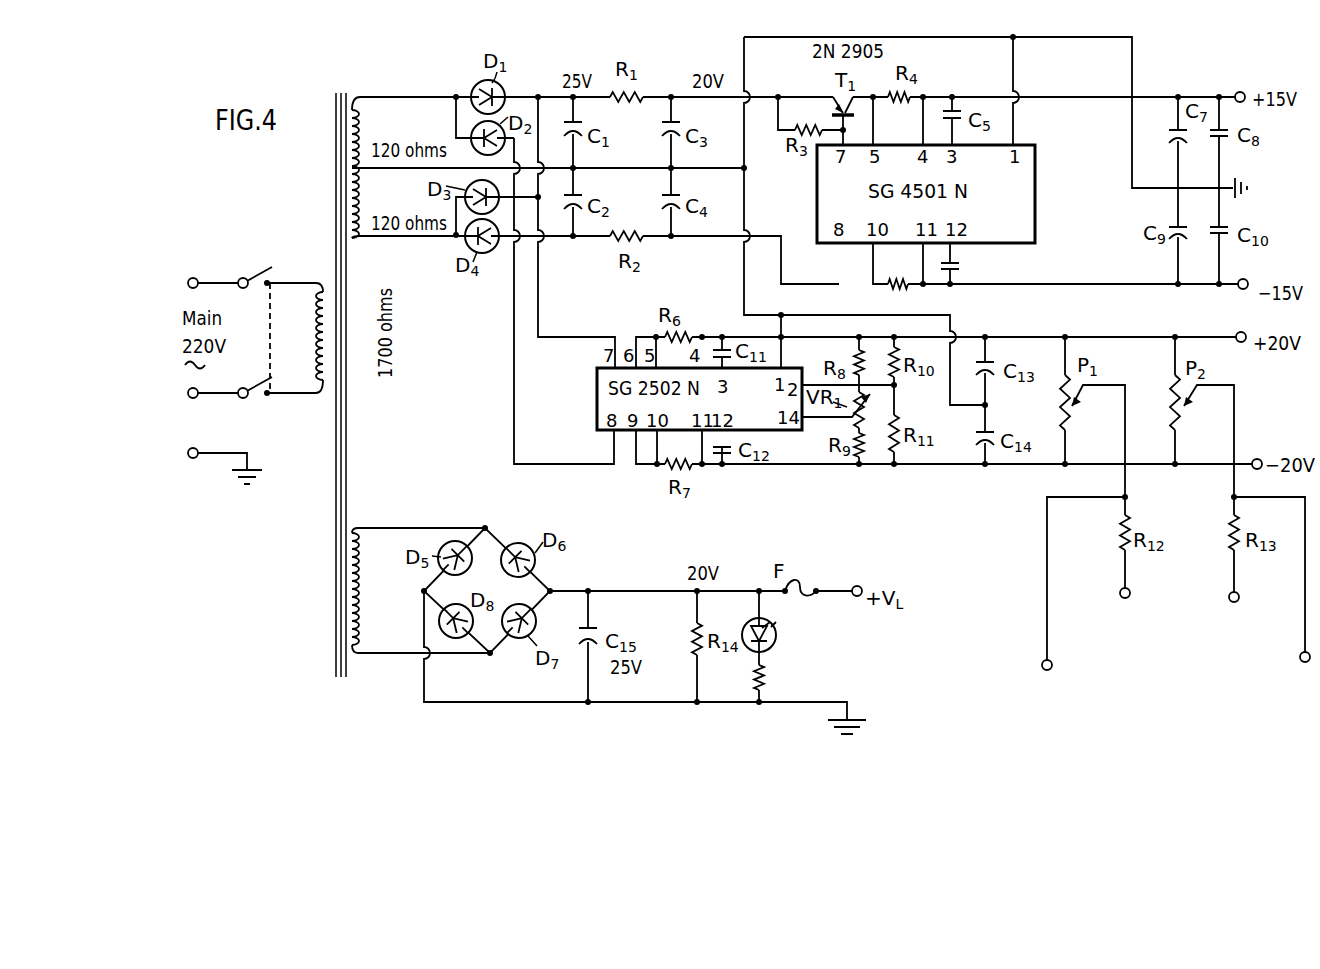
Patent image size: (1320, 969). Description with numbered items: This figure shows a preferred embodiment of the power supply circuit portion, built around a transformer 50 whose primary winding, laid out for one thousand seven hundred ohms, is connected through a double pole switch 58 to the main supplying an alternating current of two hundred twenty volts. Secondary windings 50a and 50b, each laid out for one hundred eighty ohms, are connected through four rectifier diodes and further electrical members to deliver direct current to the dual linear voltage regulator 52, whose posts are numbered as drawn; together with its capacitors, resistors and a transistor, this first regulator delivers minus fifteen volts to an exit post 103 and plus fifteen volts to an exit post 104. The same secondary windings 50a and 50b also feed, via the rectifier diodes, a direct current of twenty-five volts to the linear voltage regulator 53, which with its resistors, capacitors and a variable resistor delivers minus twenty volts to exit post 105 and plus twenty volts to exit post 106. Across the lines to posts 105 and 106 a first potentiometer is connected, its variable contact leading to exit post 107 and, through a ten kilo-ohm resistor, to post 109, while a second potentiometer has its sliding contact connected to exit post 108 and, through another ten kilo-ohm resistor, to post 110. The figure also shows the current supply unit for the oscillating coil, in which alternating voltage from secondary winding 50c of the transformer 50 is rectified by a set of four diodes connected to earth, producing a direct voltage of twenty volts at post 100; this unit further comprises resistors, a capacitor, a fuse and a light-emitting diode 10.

The transformer 50 is at (375, 385).
The secondary winding 50a is at (364, 124).
The secondary winding 50b is at (364, 190).
The secondary winding 50c is at (356, 580).
The double pole switch 58 is at (285, 313).
The dual linear voltage regulator 52 is at (1022, 192).
The linear voltage regulator 53 is at (600, 400).
The light-emitting diode 10 is at (798, 646).
The post 100 is at (860, 588).
The exit post 103 is at (1247, 280).
The exit post 104 is at (1242, 92).
The exit post 105 is at (1260, 460).
The exit post 106 is at (1243, 332).
The exit post 107 is at (1052, 667).
The exit post 108 is at (1301, 661).
The post 109 is at (1122, 598).
The post 110 is at (1238, 602).